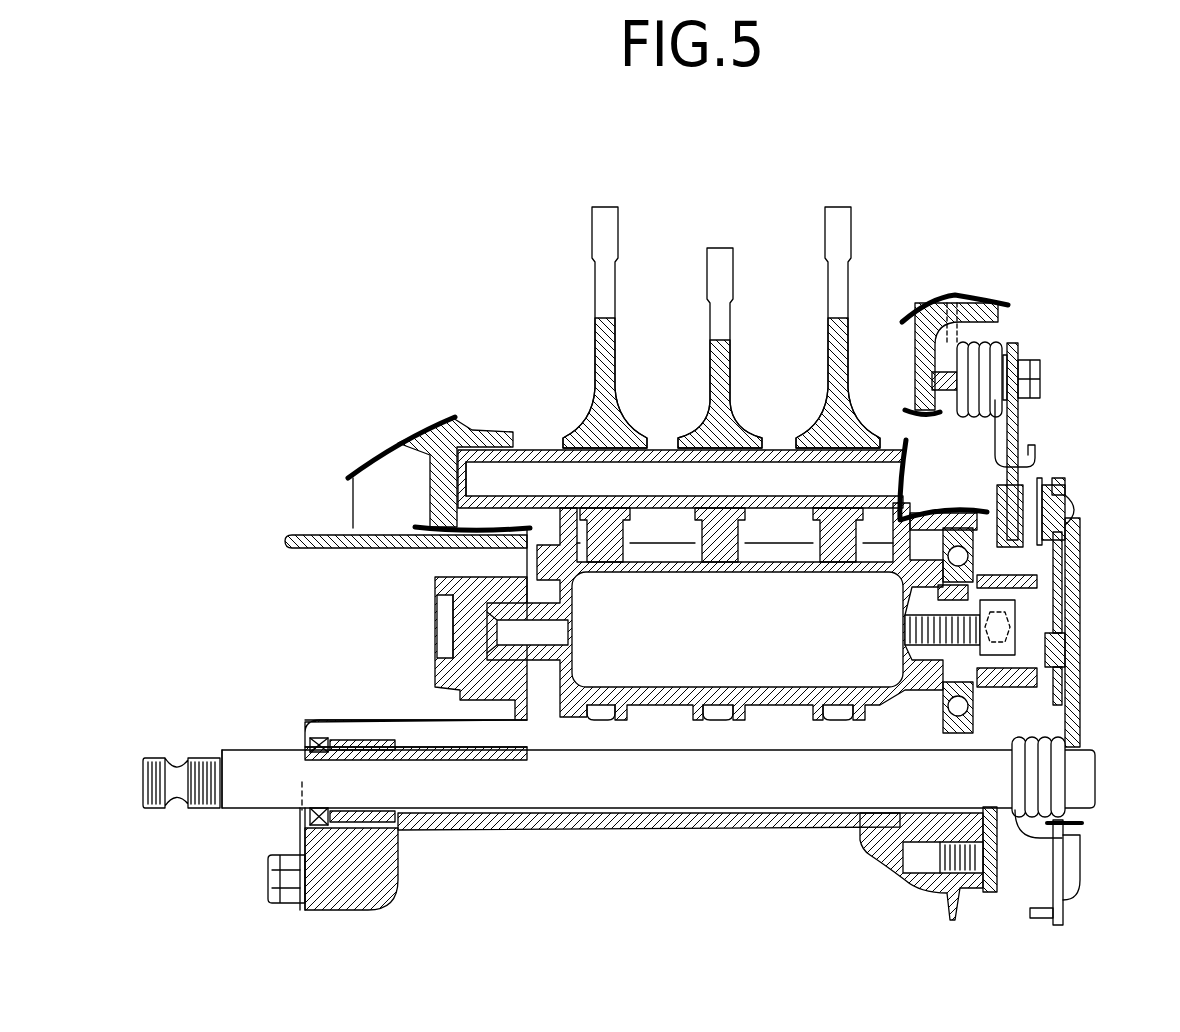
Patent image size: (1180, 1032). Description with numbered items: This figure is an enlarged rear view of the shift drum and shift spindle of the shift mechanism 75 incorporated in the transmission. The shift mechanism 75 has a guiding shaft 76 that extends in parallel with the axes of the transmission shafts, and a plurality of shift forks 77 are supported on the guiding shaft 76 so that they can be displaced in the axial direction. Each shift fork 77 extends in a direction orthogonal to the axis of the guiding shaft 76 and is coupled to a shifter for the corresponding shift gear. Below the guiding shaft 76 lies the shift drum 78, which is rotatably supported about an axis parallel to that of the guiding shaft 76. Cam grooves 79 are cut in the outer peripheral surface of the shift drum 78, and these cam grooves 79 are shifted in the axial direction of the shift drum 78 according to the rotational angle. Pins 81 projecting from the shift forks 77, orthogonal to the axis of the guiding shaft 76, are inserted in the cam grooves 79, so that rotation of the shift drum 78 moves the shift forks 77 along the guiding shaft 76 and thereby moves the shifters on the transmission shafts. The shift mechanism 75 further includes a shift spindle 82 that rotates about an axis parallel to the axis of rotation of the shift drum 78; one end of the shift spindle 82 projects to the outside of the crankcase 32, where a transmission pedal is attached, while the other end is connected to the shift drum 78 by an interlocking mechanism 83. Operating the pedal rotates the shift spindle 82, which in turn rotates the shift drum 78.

The crankcase 32 is at (445, 682).
The shift mechanism 75 is at (1062, 408).
The guiding shaft 76 is at (530, 450).
The shift forks 77 is at (600, 243).
The shift drum 78 is at (778, 705).
The cam grooves 79 is at (588, 710).
The pins 81 is at (613, 562).
The shift spindle 82 is at (867, 793).
The interlocking mechanism 83 is at (1092, 571).